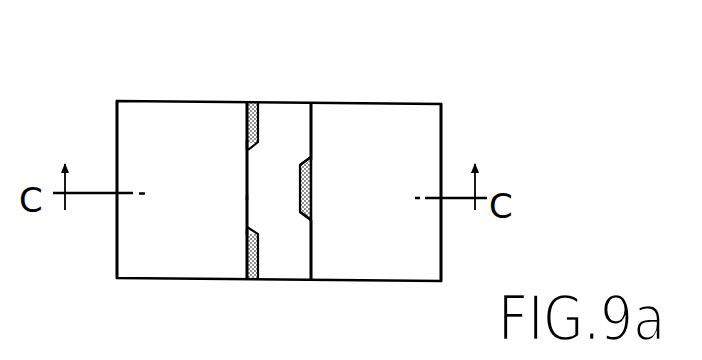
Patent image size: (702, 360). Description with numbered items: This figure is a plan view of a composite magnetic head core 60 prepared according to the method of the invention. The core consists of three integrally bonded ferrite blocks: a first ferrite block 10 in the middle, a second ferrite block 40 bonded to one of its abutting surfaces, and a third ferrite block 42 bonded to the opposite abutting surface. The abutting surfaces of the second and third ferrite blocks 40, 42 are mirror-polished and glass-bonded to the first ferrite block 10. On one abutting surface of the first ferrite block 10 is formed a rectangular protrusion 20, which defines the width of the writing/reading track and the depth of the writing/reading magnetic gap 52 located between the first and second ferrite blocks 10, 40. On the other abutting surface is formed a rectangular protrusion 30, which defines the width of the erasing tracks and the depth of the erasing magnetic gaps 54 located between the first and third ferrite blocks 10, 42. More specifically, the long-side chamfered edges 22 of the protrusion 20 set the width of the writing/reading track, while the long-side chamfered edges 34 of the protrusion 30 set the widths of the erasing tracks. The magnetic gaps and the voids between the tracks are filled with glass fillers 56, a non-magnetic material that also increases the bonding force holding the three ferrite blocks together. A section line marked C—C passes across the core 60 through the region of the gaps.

The composite magnetic head core 60 is at (100, 87).
The second ferrite block 40 is at (139, 115).
The third ferrite block 42 is at (430, 122).
The first ferrite block 10 is at (276, 137).
The protrusion 20 is at (247, 172).
The writing/reading magnetic gap 52 is at (245, 200).
The long-side chamfered edge 22 is at (246, 137).
The glass filler 56 is at (252, 107).
The erasing magnetic gap 54 is at (313, 118).
The protrusion 30 is at (315, 139).
The long-side chamfered edge 34 is at (312, 163).